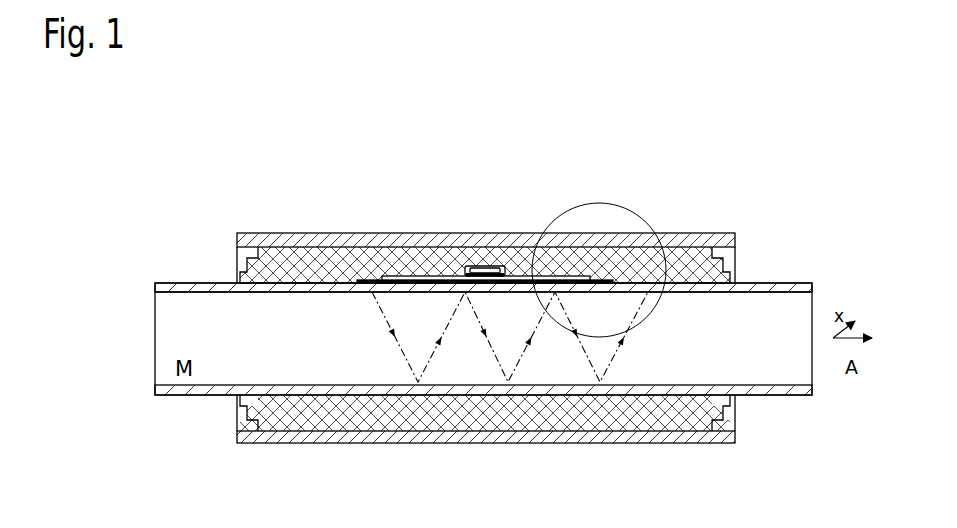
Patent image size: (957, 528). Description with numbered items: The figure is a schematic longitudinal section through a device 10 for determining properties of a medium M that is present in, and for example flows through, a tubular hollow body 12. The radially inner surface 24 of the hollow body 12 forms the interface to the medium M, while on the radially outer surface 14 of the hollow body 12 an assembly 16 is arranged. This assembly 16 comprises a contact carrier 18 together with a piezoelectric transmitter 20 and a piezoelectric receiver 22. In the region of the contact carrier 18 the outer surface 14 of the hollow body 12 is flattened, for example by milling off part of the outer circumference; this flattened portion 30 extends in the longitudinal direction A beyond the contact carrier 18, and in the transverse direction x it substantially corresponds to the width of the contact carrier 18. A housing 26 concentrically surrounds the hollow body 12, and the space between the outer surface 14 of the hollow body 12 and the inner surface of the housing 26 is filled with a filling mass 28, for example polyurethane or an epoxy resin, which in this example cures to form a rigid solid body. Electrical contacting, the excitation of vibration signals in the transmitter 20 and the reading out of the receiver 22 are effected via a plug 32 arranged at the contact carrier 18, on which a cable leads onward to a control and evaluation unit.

The device 10 is at (162, 180).
The tubular hollow body 12 is at (162, 283).
The radially outer surface 14 is at (190, 283).
The assembly 16 is at (433, 266).
The contact carrier 18 is at (397, 276).
The piezoelectric transmitter 20 is at (367, 281).
The piezoelectric receiver 22 is at (605, 283).
The radially inner surface 24 is at (173, 292).
The housing 26 is at (251, 240).
The filling mass 28 is at (275, 425).
The flattened portion 30 is at (297, 283).
The plug 32 is at (485, 266).